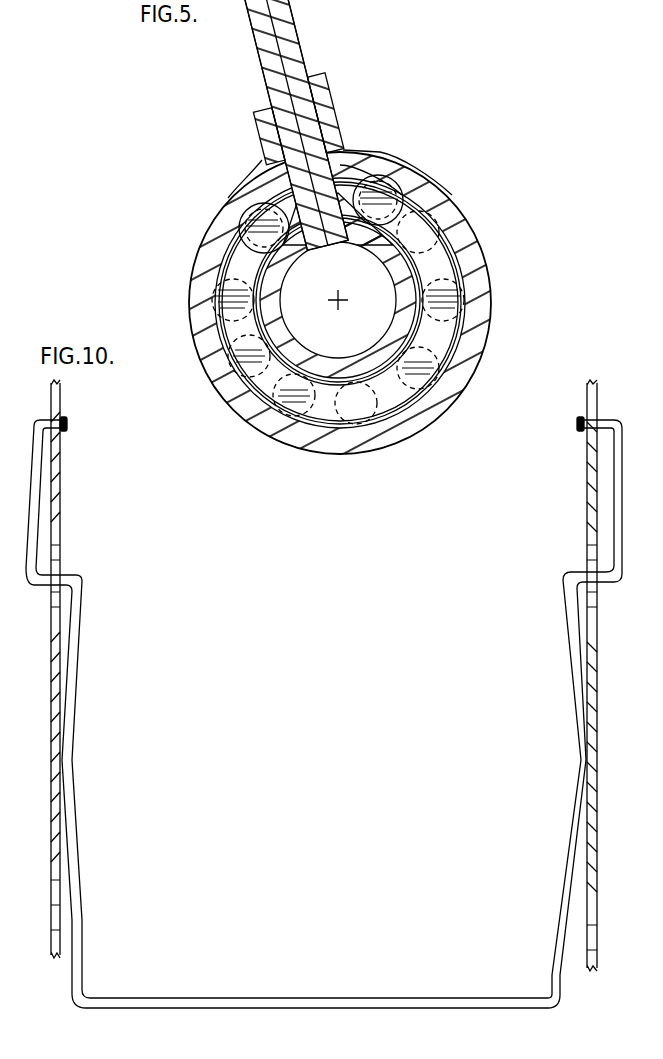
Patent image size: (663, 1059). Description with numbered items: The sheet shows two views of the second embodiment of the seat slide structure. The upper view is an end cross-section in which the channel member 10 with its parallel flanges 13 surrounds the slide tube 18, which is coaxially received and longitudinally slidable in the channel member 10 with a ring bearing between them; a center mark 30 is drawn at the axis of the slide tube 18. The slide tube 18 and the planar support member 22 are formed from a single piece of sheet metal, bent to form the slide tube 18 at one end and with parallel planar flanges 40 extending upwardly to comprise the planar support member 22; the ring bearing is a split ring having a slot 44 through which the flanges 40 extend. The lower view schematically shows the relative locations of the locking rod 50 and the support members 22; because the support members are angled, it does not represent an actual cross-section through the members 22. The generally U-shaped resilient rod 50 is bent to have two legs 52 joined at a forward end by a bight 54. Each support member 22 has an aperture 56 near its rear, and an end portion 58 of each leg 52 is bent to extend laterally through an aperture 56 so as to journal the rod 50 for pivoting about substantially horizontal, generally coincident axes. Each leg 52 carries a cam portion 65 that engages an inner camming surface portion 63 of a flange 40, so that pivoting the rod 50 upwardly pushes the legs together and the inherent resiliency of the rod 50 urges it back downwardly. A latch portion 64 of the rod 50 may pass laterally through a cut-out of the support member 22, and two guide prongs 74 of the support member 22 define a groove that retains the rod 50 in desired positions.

In FIG. 5, the channel member 10 is at (196, 233).
In FIG. 5, the parallel flanges 13 is at (250, 134).
In FIG. 5, the slide tube 18 is at (428, 242).
In FIG. 5, the shaft bore 30 is at (339, 300).
In FIG. 5, the planar flanges 40 is at (252, 16).
In FIG. 5, the slot 44 is at (383, 152).
In FIG. 10, the planar support member 22 is at (59, 502).
In FIG. 10, the resilient rod 50 is at (319, 702).
In FIG. 10, the legs 52 is at (82, 870).
In FIG. 10, the bight 54 is at (340, 1000).
In FIG. 10, the aperture 56 is at (61, 434).
In FIG. 10, the end portion 58 is at (66, 424).
In FIG. 10, the camming surface portion 63 is at (62, 808).
In FIG. 10, the latch portion 64 is at (62, 578).
In FIG. 10, the cam portion 65 is at (66, 760).
In FIG. 10, the guide prongs 74 is at (586, 560).